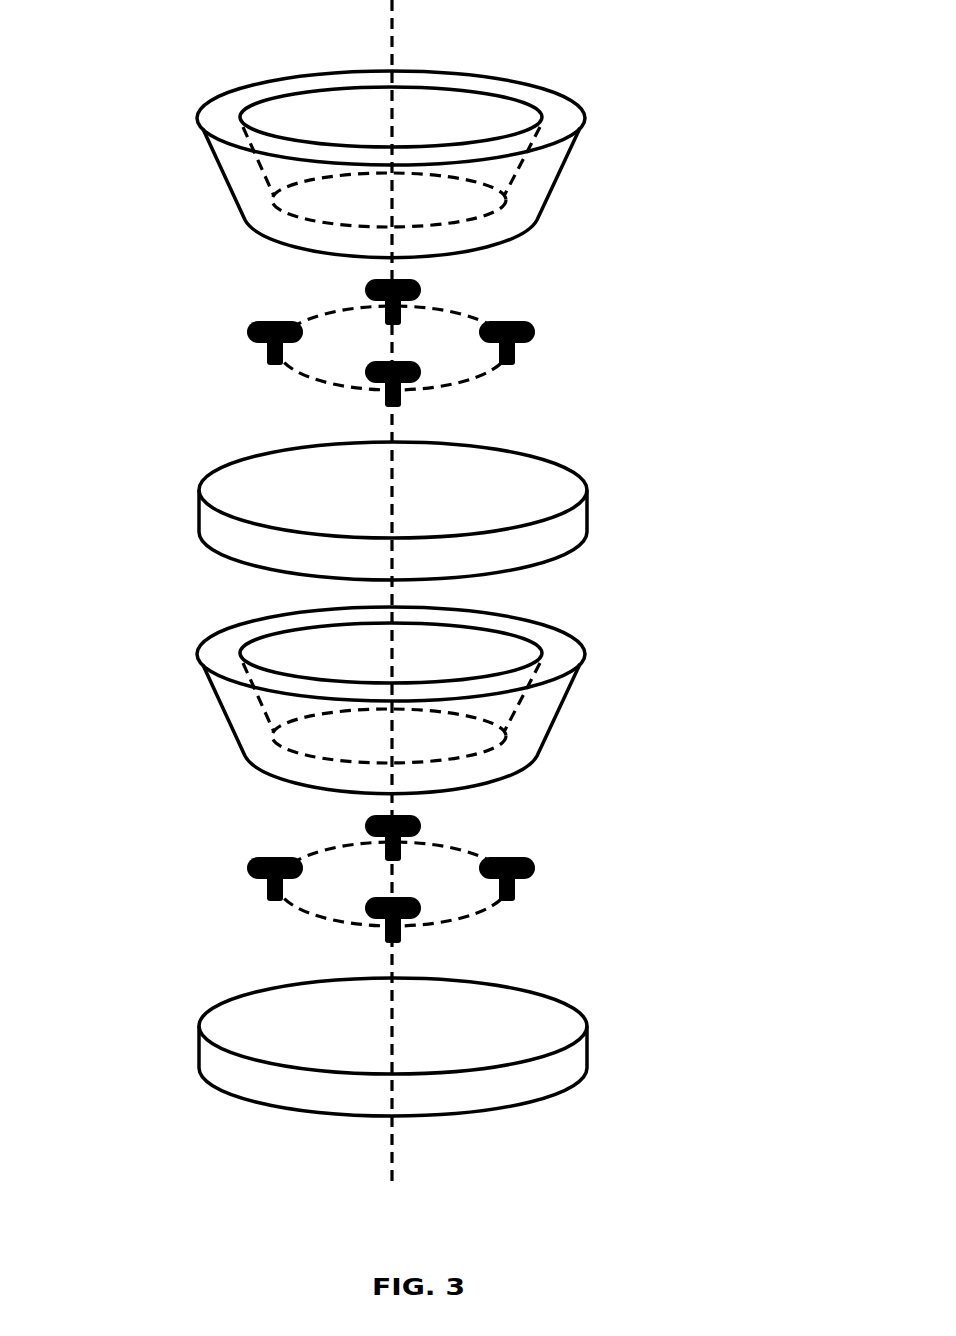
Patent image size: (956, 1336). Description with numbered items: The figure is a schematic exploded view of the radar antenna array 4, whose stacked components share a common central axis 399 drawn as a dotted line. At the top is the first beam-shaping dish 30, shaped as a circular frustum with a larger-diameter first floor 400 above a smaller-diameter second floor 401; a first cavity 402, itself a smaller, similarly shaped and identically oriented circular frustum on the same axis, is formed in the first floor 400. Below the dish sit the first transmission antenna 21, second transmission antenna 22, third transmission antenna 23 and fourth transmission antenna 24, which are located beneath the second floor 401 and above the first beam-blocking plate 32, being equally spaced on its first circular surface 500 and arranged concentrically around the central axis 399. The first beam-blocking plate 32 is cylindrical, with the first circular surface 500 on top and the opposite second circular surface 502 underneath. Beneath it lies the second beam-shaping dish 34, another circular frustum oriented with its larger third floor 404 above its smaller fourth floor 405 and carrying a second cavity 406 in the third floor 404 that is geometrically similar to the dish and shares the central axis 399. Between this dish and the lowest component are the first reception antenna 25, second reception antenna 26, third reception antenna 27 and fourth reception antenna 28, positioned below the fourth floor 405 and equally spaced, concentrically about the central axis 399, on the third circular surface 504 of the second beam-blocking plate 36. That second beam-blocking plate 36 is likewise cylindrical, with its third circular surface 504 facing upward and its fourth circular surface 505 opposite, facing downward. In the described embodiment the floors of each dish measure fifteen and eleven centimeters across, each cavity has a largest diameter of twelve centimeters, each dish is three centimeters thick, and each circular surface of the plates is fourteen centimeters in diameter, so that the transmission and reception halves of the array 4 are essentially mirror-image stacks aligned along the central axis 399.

The radar antenna array 4 is at (730, 66).
The central axis 399 is at (393, 4).
The first beam-shaping dish 30 is at (387, 165).
The first floor 400 is at (212, 110).
The second floor 401 is at (272, 244).
The first cavity 402 is at (502, 110).
The first transmission antenna 21 is at (247, 337).
The second transmission antenna 22 is at (397, 400).
The third transmission antenna 23 is at (530, 343).
The fourth transmission antenna 24 is at (418, 290).
The first beam-blocking plate 32 is at (402, 514).
The first circular surface 500 is at (225, 477).
The second circular surface 502 is at (235, 560).
The second beam-shaping dish 34 is at (385, 704).
The third floor 404 is at (218, 647).
The fourth floor 405 is at (273, 775).
The second cavity 406 is at (515, 652).
The first reception antenna 25 is at (248, 872).
The second reception antenna 26 is at (400, 938).
The third reception antenna 27 is at (532, 877).
The fourth reception antenna 28 is at (420, 827).
The second beam-blocking plate 36 is at (398, 1071).
The third circular surface 504 is at (218, 1018).
The fourth circular surface 505 is at (243, 1097).